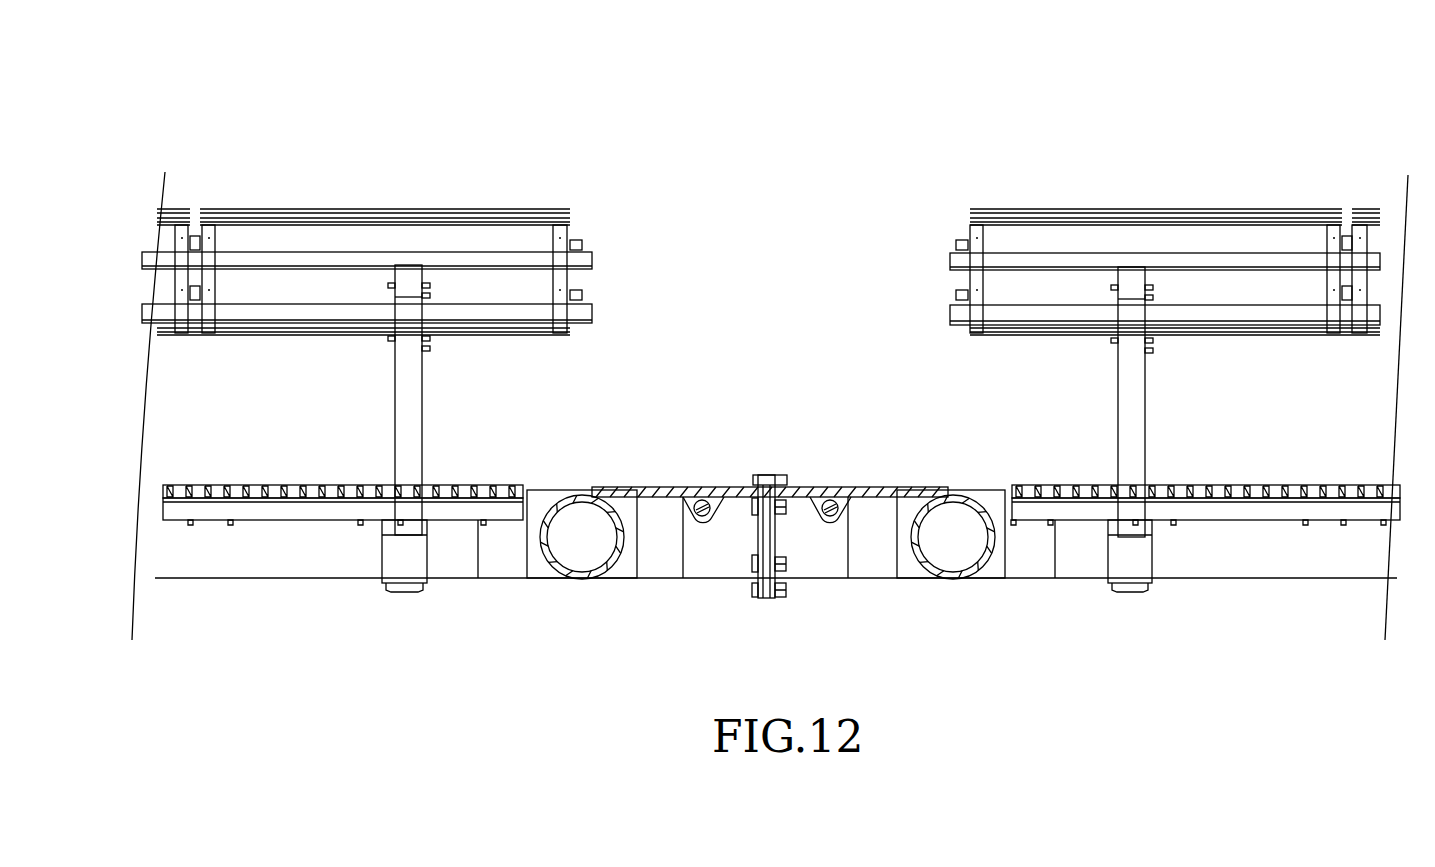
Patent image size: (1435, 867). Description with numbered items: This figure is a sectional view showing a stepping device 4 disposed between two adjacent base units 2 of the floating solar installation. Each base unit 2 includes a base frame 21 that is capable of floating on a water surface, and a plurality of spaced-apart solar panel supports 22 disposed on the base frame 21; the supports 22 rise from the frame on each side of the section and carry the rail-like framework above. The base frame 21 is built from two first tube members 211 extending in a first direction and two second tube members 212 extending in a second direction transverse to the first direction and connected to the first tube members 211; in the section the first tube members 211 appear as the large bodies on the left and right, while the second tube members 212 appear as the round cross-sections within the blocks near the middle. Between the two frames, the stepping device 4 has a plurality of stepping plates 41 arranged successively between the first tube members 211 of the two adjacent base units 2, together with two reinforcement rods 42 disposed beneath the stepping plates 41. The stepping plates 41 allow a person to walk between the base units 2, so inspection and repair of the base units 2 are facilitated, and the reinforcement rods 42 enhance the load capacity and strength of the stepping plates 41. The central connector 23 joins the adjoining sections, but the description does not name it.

The base unit 2 is at (490, 180).
The stepping device 4 is at (357, 470).
The base frame 21 is at (455, 598).
The solar panel support 22 is at (396, 606).
The bolt connector 23 is at (765, 445).
The stepping plate 41 is at (180, 485).
The reinforcement rod 42 is at (265, 522).
The first tube member 211 is at (195, 582).
The second tube member 212 is at (545, 580).